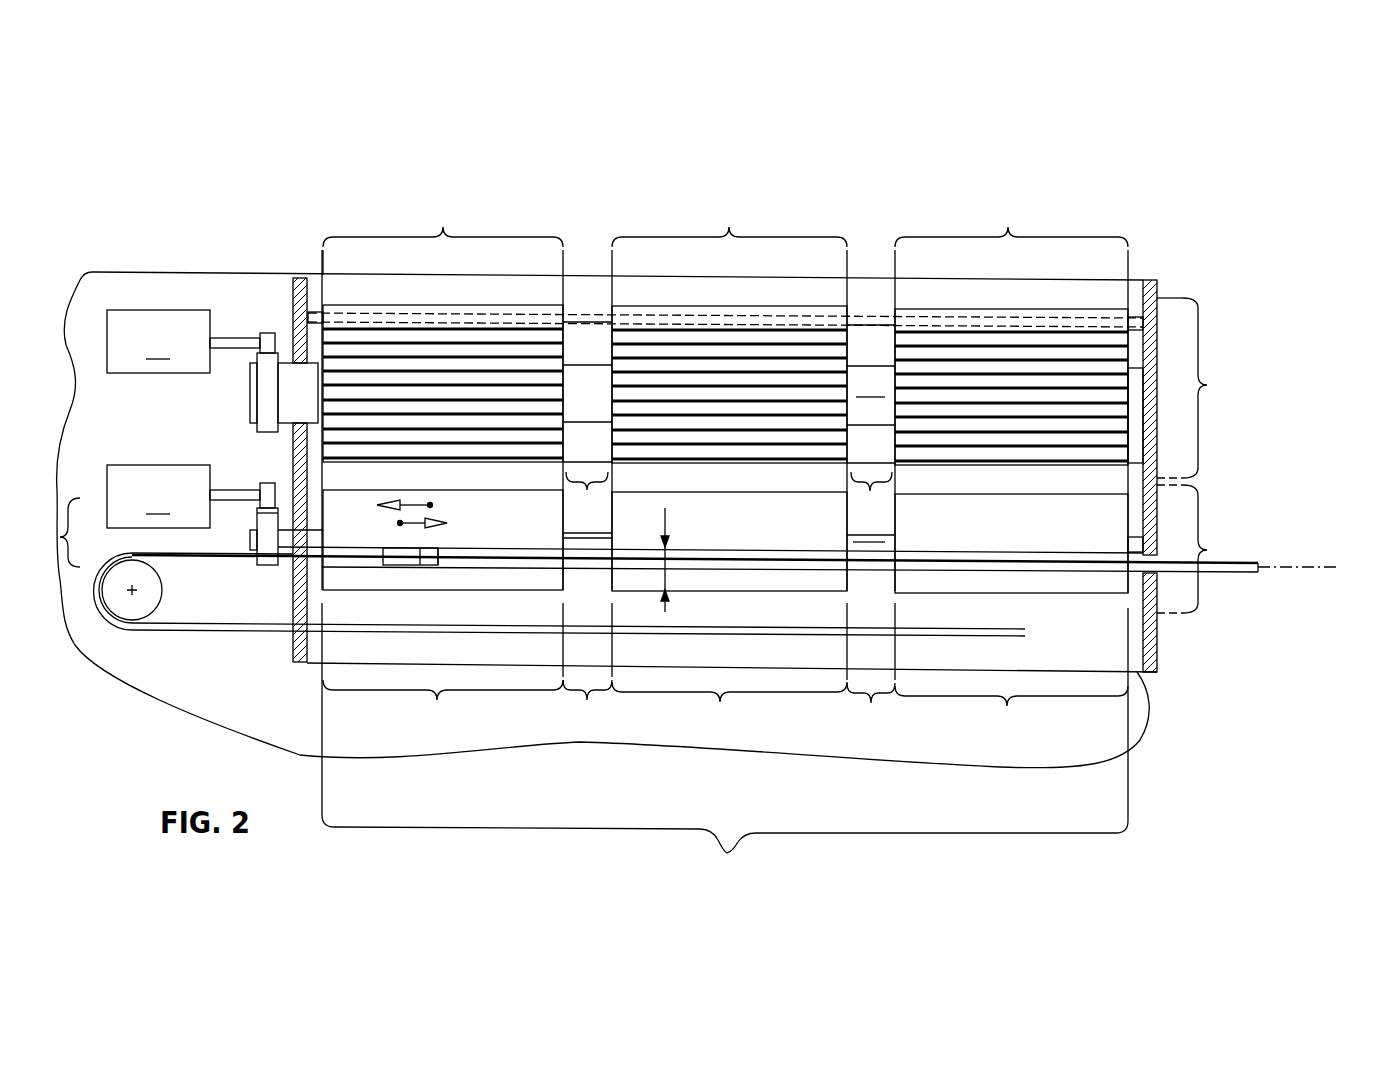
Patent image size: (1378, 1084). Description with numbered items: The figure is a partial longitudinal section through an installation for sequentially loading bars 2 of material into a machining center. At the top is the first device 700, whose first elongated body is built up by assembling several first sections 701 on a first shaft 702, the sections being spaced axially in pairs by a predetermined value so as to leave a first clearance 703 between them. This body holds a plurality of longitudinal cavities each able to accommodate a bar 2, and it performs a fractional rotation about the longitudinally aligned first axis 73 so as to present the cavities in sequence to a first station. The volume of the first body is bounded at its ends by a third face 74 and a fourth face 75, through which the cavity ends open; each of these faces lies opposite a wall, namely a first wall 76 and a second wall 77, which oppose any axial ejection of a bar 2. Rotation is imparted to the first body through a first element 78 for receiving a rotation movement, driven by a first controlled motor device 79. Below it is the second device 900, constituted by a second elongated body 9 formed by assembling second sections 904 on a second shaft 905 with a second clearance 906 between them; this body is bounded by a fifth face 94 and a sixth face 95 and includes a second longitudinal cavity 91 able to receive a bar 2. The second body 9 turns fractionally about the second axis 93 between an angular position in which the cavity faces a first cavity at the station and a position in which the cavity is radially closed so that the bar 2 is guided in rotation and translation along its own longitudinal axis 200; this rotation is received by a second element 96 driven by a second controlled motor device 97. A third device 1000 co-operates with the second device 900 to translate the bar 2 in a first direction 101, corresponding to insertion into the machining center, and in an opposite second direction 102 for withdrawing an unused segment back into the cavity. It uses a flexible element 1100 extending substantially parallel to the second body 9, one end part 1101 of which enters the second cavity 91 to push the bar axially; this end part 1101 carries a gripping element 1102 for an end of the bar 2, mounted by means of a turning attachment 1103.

The bar 2 is at (586, 315).
The second elongated body 9 is at (727, 853).
The first axis 73 is at (870, 397).
The third face 74 is at (1137, 343).
The fourth face 75 is at (307, 322).
The first wall 76 is at (311, 285).
The second wall 77 is at (1143, 297).
The first element for receiving a rotation movement 78 is at (267, 392).
The first controlled motor device 79 is at (183, 341).
The second longitudinal cavity 91 is at (665, 512).
The second axis 93 is at (870, 542).
The fifth face 94 is at (306, 574).
The sixth face 95 is at (1130, 588).
The second element for receiving a rotation movement 96 is at (267, 535).
The second controlled motor device 97 is at (183, 496).
The first direction 101 is at (400, 523).
The second direction 102 is at (430, 505).
The longitudinal axis 200 is at (1312, 570).
The first device 700 is at (1207, 385).
The first section 701 is at (443, 227).
The first shaft 702 is at (853, 377).
The first clearance 703 is at (587, 492).
The second device 900 is at (1207, 550).
The second section 904 is at (437, 700).
The second shaft 905 is at (593, 531).
The second clearance 906 is at (587, 700).
The third device 1000 is at (70, 560).
The flexible element 1100 is at (332, 625).
The end part 1101 is at (367, 561).
The gripping element 1102 is at (441, 566).
The turning attachment 1103 is at (405, 562).